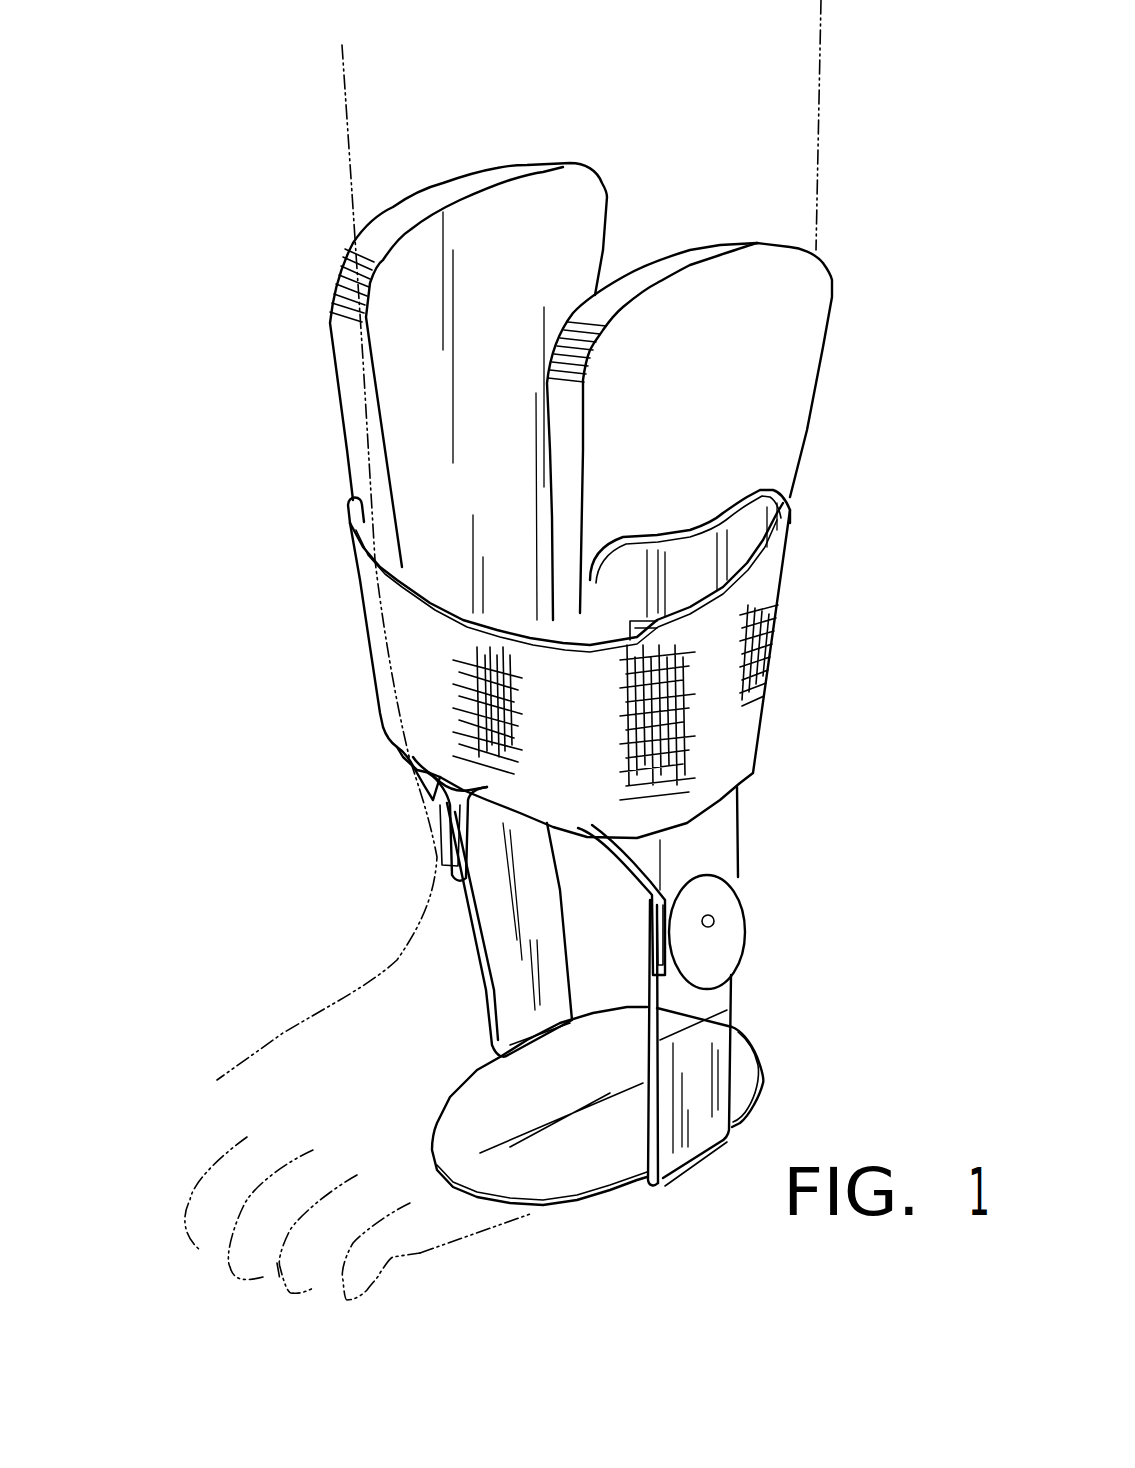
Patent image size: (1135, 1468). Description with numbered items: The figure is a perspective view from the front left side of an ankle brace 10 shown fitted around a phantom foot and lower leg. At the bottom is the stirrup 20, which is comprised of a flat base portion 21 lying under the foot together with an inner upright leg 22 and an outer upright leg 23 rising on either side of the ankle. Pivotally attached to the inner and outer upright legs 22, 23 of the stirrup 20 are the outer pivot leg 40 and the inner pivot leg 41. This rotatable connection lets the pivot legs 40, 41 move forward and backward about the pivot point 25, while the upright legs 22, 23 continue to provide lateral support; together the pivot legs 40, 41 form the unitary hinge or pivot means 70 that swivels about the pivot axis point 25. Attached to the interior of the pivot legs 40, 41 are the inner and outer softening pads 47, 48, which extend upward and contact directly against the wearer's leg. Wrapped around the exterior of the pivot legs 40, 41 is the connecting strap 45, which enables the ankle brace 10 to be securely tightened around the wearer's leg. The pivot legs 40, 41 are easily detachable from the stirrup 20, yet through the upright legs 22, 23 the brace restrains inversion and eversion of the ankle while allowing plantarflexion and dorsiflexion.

The ankle brace 10 is at (294, 182).
The stirrup 20 is at (782, 1052).
The flat base portion 21 is at (627, 1157).
The inner upright leg 22 is at (517, 1005).
The outer upright leg 23 is at (720, 995).
The pivot point 25 is at (714, 923).
The outer pivot leg 40 is at (720, 828).
The inner pivot leg 41 is at (427, 790).
The connecting strap 45 is at (753, 607).
The inner softening pad 47 is at (793, 393).
The outer softening pad 48 is at (557, 178).
The unitary hinge or pivot means 70 is at (445, 842).